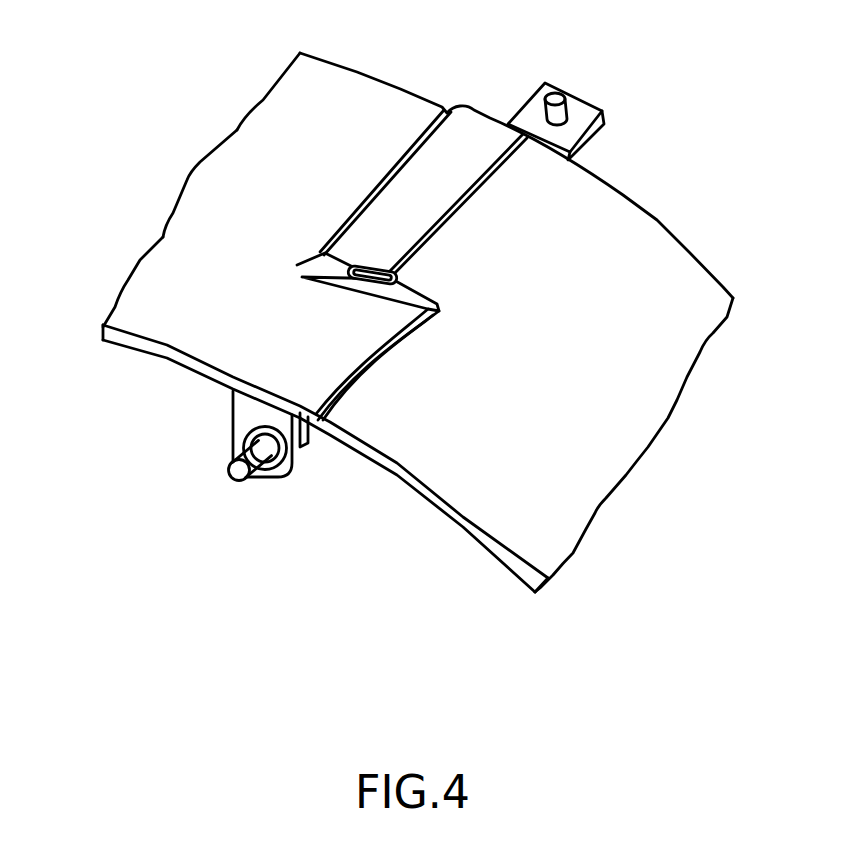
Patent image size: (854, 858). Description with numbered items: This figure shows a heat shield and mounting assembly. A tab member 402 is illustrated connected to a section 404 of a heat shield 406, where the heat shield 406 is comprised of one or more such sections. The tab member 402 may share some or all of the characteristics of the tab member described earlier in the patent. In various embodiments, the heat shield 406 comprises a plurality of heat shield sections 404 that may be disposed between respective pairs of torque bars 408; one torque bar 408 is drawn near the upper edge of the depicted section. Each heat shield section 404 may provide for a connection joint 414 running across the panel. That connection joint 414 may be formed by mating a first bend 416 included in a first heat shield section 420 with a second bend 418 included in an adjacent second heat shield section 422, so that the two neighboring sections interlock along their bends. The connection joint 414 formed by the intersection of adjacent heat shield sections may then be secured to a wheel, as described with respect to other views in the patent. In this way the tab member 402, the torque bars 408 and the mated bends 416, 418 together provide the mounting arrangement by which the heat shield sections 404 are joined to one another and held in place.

The tab member 402 is at (238, 418).
The heat shield section 404 is at (140, 293).
The heat shield 406 is at (203, 173).
The torque bar 408 is at (600, 122).
The connection joint 414 is at (431, 180).
The first bend 416 is at (410, 265).
The second bend 418 is at (352, 273).
The first heat shield section 420 is at (275, 118).
The second heat shield section 422 is at (552, 551).